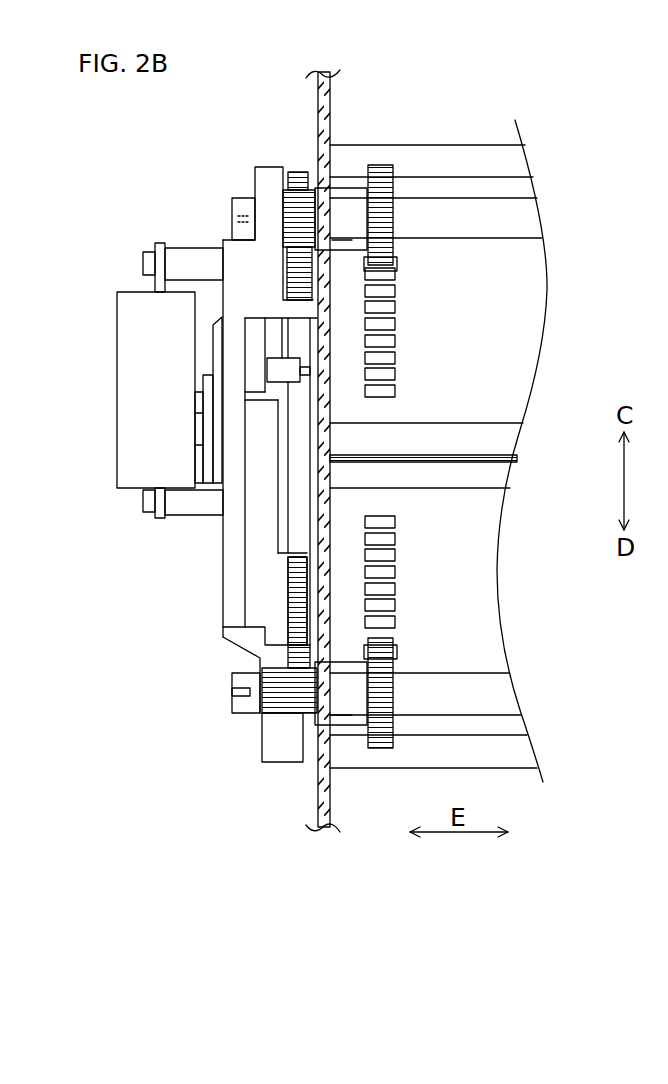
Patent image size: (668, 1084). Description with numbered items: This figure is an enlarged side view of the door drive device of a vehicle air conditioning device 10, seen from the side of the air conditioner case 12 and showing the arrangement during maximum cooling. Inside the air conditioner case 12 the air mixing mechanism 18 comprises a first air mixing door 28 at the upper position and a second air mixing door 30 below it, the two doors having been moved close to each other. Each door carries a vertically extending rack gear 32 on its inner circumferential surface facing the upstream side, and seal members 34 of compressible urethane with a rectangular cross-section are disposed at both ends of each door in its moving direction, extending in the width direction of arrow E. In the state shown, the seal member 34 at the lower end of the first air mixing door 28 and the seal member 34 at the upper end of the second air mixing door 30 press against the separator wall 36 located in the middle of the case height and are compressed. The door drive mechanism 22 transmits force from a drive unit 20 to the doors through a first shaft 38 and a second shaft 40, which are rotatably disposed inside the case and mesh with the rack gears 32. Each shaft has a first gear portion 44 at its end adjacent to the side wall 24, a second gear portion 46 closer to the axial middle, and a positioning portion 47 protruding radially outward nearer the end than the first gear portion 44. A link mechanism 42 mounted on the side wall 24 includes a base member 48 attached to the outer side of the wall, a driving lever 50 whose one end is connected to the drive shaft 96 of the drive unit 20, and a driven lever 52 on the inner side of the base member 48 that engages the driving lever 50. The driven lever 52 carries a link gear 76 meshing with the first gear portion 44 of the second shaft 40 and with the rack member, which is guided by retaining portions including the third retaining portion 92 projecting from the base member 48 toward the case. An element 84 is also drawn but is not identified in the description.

The vehicle air conditioning device 10 is at (578, 96).
The air conditioner case 12 is at (335, 98).
The air mixing mechanism 18 is at (556, 297).
The drive unit 20 is at (136, 342).
The door drive mechanism 22 is at (206, 520).
The side wall 24 is at (324, 790).
The first air mixing door 28 is at (520, 355).
The second air mixing door 30 is at (485, 622).
The rack gear 32 is at (385, 310).
The seal member 34 is at (438, 160).
The separator wall 36 is at (498, 452).
The first shaft 38 is at (518, 222).
The second shaft 40 is at (490, 697).
The link mechanism 42 is at (297, 601).
The first gear portion 44 is at (288, 210).
The second gear portion 46 is at (388, 224).
The positioning portion 47 is at (240, 220).
The base member 48 is at (238, 590).
The driving lever 50 is at (203, 390).
The driven lever 52 is at (326, 560).
The link gear 76 is at (288, 590).
The gear portion 84 is at (290, 262).
The third retaining portion 92 is at (278, 374).
The drive shaft 96 is at (200, 428).